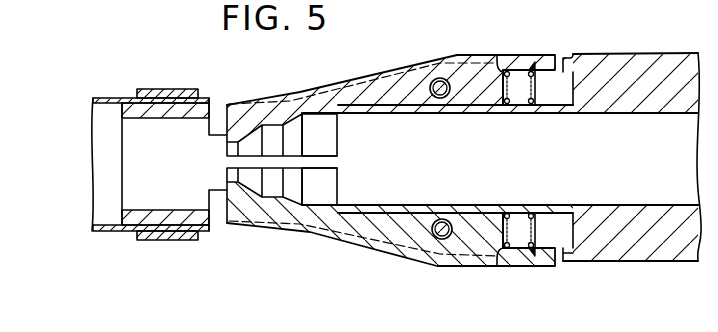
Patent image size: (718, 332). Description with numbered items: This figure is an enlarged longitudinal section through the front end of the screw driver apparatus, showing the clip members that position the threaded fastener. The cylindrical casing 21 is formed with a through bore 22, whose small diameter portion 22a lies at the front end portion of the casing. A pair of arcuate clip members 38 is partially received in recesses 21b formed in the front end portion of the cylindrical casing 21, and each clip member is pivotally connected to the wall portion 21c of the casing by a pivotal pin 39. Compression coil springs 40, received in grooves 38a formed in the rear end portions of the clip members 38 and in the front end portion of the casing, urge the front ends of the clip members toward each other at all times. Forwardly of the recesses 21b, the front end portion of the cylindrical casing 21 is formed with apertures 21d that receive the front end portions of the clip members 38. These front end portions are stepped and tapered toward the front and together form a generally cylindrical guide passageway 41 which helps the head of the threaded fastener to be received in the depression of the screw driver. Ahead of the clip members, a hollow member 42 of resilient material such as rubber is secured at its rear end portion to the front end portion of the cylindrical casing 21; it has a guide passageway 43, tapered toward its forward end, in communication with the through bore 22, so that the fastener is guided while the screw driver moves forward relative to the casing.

The cylindrical casing 21 is at (645, 263).
The recesses 21b is at (556, 90).
The wall portion 21c is at (566, 64).
The apertures 21d is at (240, 84).
The through bore 22 is at (632, 163).
The small diameter portion 22a is at (684, 180).
The arcuate clip members 38 is at (378, 61).
The grooves 38a is at (510, 39).
The pivotal pins 39 is at (440, 100).
The compression coil springs 40 is at (529, 63).
The guide passageway 41 is at (332, 149).
The hollow member 42 is at (105, 98).
The guide passageway 43 is at (98, 186).